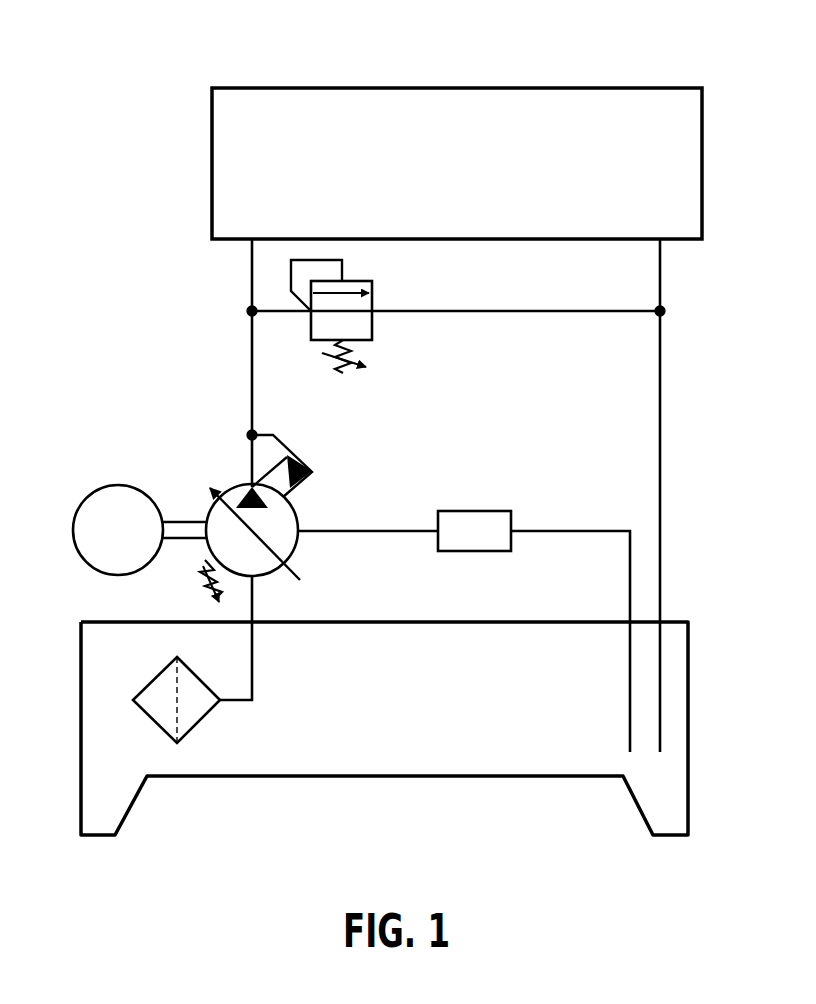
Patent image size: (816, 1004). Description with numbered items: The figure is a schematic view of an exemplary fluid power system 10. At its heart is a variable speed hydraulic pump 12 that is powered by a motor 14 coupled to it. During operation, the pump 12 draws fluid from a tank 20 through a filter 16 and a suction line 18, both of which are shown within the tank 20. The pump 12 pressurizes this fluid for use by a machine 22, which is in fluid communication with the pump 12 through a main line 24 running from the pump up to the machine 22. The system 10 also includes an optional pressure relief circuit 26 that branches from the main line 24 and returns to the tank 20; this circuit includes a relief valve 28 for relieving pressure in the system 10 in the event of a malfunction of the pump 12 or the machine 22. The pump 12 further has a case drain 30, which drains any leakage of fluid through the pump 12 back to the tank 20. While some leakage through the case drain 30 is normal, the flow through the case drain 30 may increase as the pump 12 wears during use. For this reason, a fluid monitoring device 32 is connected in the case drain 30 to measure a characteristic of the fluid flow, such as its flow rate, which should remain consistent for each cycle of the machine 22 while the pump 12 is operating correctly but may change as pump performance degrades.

The fluid power system 10 is at (180, 55).
The variable speed hydraulic pump 12 is at (233, 485).
The motor 14 is at (73, 530).
The filter 16 is at (157, 678).
The suction line 18 is at (252, 690).
The tank 20 is at (100, 622).
The machine 22 is at (672, 88).
The main line 24 is at (250, 385).
The pressure relief circuit 26 is at (532, 312).
The relief valve 28 is at (372, 331).
The case drain 30 is at (364, 530).
The fluid monitoring device 32 is at (492, 511).